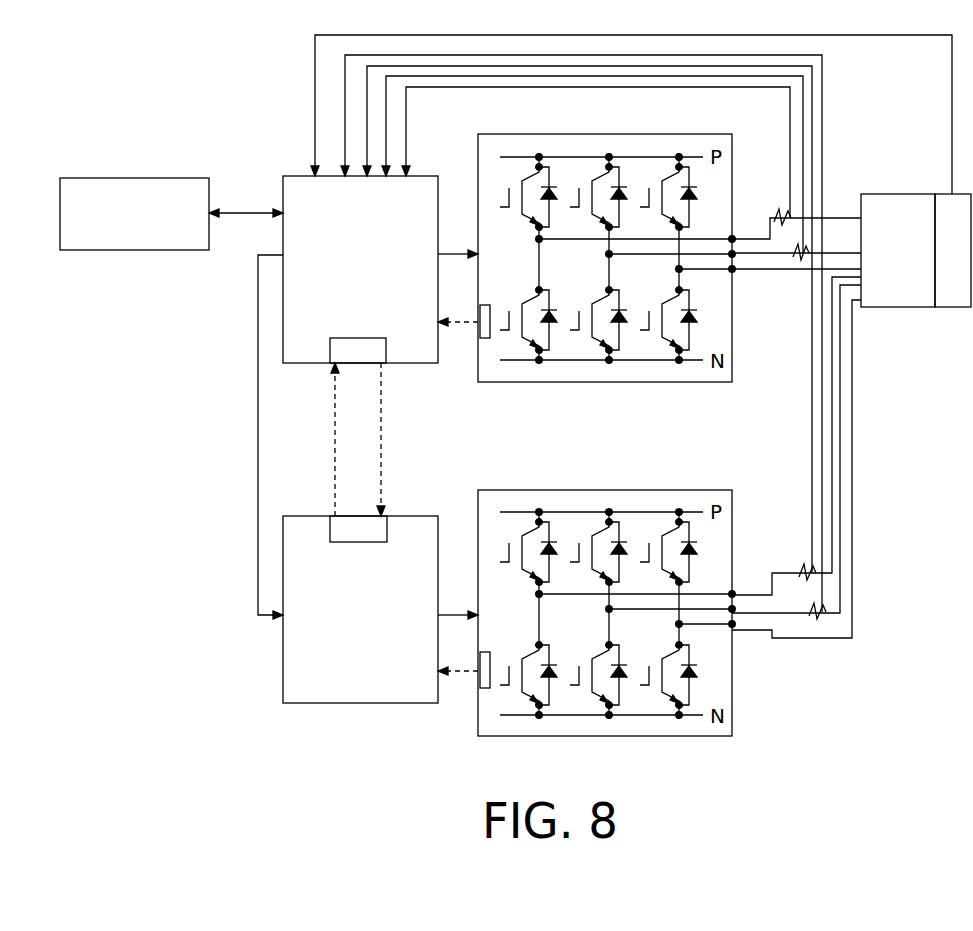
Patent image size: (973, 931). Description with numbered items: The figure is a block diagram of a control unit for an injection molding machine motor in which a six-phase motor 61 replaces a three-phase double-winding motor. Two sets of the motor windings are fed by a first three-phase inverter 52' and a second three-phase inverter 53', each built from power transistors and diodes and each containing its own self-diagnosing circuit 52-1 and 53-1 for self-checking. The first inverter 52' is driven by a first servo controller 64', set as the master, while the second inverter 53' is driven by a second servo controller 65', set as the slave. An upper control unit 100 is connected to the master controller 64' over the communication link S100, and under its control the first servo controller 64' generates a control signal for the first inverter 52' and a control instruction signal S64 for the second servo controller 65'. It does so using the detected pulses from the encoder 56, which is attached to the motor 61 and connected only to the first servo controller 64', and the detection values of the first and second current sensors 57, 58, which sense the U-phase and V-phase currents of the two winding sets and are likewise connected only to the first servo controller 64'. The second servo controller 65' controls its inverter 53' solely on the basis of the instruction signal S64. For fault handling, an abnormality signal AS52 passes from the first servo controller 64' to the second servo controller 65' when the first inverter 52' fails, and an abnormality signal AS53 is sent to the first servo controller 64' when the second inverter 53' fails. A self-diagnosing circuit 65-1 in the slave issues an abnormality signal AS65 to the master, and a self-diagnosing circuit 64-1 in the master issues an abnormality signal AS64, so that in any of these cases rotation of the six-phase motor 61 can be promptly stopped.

The upper control unit 100 is at (132, 178).
The communication signal between upper control unit and servo controller S100 is at (243, 210).
The first servo controller 64' is at (357, 235).
The second servo controller 65' is at (360, 639).
The self-diagnosing circuit 64-1 is at (338, 350).
The self-diagnosing circuit 65-1 is at (338, 532).
The control instruction signal S64 is at (258, 430).
The first three-phase inverter 52' is at (606, 237).
The second three-phase inverter 53' is at (606, 591).
The self-diagnosing circuit 52-1 is at (485, 340).
The self-diagnosing circuit 53-1 is at (485, 690).
The first current sensors 57 is at (804, 252).
The second current sensors 58 is at (812, 624).
The six-phase motor 61 is at (893, 194).
The encoder 56 is at (962, 307).
The abnormality signal AS52 is at (462, 326).
The abnormality signal AS53 is at (463, 680).
The abnormality signal AS64 is at (383, 447).
The abnormality signal AS65 is at (333, 460).